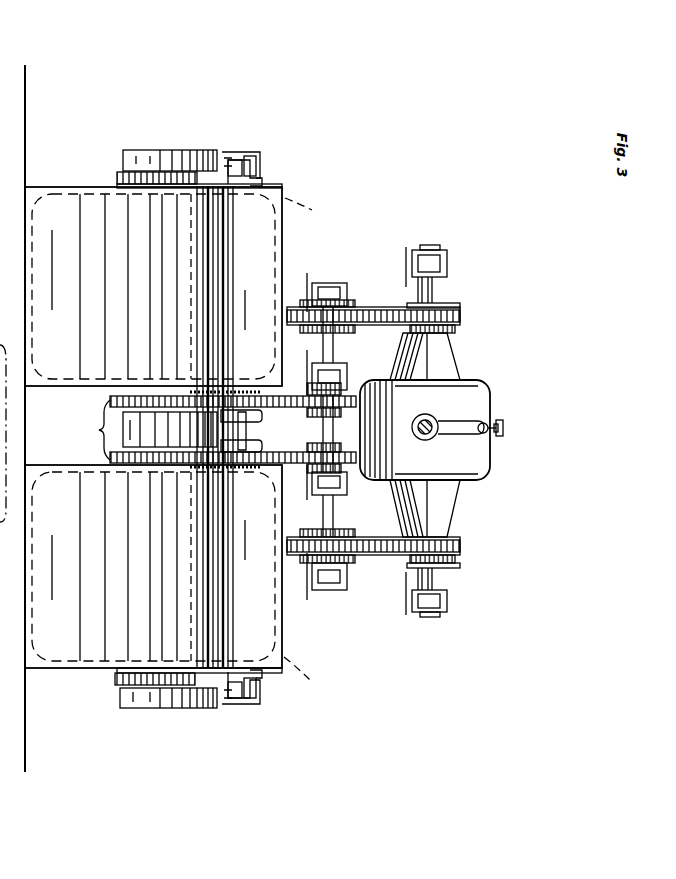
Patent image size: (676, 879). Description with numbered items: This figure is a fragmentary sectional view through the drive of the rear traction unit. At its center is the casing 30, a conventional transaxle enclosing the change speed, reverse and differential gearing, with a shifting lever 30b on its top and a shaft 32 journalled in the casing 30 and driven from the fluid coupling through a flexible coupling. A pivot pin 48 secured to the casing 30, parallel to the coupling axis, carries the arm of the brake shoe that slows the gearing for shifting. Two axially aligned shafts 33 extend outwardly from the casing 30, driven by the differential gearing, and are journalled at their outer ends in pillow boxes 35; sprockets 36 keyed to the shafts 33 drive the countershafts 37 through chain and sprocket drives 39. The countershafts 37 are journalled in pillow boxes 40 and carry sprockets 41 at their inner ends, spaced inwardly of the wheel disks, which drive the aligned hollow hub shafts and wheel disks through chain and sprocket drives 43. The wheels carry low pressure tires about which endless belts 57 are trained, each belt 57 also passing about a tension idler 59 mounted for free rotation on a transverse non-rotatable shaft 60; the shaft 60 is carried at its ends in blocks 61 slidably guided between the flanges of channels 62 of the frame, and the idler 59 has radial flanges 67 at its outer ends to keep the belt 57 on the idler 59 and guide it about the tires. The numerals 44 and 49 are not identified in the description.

The casing 30 is at (430, 435).
The shifting lever 30b is at (517, 462).
The shaft 32 is at (437, 439).
The axially aligned shafts 33 is at (453, 446).
The pillow boxes 35 is at (436, 437).
The sprockets 36 is at (457, 443).
The countershafts 37 is at (352, 421).
The chain and sprocket drives 39 is at (373, 438).
The pillow boxes 40 is at (319, 431).
The sprockets 41 is at (233, 428).
The chain and sprocket drives 43 is at (137, 430).
The end gear 44 is at (145, 432).
The pivot pin 48 is at (502, 411).
The conduit arm 49 is at (461, 412).
The endless belts 57 is at (153, 434).
The tension idler 59 is at (308, 447).
The non-rotatable shaft 60 is at (261, 457).
The blocks 61 is at (247, 411).
The channels 62 is at (259, 428).
The radial flanges 67 is at (284, 446).